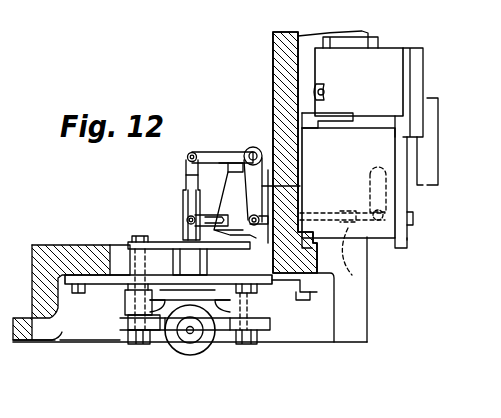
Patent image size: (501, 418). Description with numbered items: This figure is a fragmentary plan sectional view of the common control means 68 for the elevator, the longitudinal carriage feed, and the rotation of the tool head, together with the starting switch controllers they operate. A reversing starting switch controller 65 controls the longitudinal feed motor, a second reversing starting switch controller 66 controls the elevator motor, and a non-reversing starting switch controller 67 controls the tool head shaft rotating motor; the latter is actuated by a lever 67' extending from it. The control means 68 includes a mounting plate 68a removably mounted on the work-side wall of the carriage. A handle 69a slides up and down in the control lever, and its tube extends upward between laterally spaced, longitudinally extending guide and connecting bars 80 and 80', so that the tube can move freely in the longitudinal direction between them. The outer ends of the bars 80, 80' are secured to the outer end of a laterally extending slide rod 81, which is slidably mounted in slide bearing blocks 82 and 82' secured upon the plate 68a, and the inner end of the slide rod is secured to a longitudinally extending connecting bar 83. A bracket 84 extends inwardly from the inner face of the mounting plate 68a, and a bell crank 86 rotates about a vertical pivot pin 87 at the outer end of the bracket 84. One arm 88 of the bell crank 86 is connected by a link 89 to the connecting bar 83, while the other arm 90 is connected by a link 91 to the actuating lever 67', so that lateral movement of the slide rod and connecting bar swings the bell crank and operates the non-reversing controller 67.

The reversing starting switch controller 65 is at (438, 128).
The reversing starting switch controller 66 is at (360, 135).
The non-reversing starting switch controller 67 is at (354, 188).
The lever 67' is at (374, 199).
The common control means 68 is at (184, 355).
The mounting plate 68a is at (300, 305).
The handle 69a is at (178, 355).
The guide and connecting bar 80 is at (190, 357).
The guide and connecting bar 80' is at (177, 315).
The slide rod 81 is at (137, 262).
The slide bearing block 82 is at (119, 289).
The slide bearing block 82' is at (172, 309).
The connecting bar 83 is at (158, 242).
The bracket 84 is at (238, 152).
The bell crank 86 is at (214, 152).
The pivot pin 87 is at (256, 147).
The arm 88 is at (198, 152).
The link 89 is at (188, 186).
The arm 90 is at (292, 152).
The link 91 is at (360, 262).